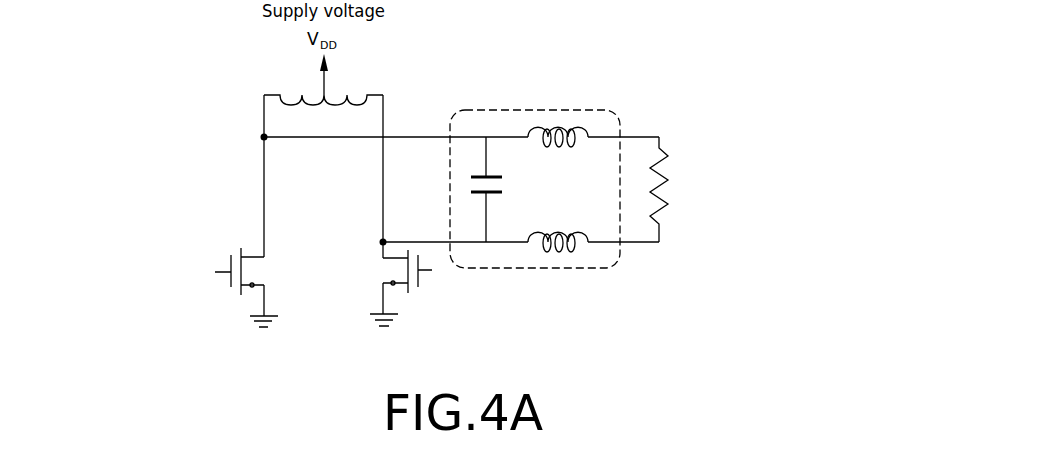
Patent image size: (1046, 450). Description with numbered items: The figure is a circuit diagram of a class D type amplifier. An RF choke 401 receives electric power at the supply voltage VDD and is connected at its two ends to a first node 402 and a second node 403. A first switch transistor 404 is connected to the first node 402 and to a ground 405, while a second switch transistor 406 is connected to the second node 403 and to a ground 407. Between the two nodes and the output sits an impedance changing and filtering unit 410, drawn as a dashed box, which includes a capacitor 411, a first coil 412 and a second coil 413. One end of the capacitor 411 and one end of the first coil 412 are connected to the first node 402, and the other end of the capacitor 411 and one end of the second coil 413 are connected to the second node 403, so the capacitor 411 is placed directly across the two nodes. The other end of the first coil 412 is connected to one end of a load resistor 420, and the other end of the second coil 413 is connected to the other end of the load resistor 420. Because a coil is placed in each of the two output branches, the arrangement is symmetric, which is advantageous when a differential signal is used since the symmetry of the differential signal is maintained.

The RF choke 401 is at (347, 102).
The first node 402 is at (258, 137).
The second node 403 is at (378, 242).
The first switch transistor 404 is at (229, 283).
The ground 405 is at (270, 327).
The second switch transistor 406 is at (420, 288).
The ground 407 is at (390, 327).
The impedance changing and filtering unit 410 is at (538, 110).
The capacitor 411 is at (502, 184).
The first coil 412 is at (572, 147).
The second coil 413 is at (571, 252).
The load resistor 420 is at (664, 208).